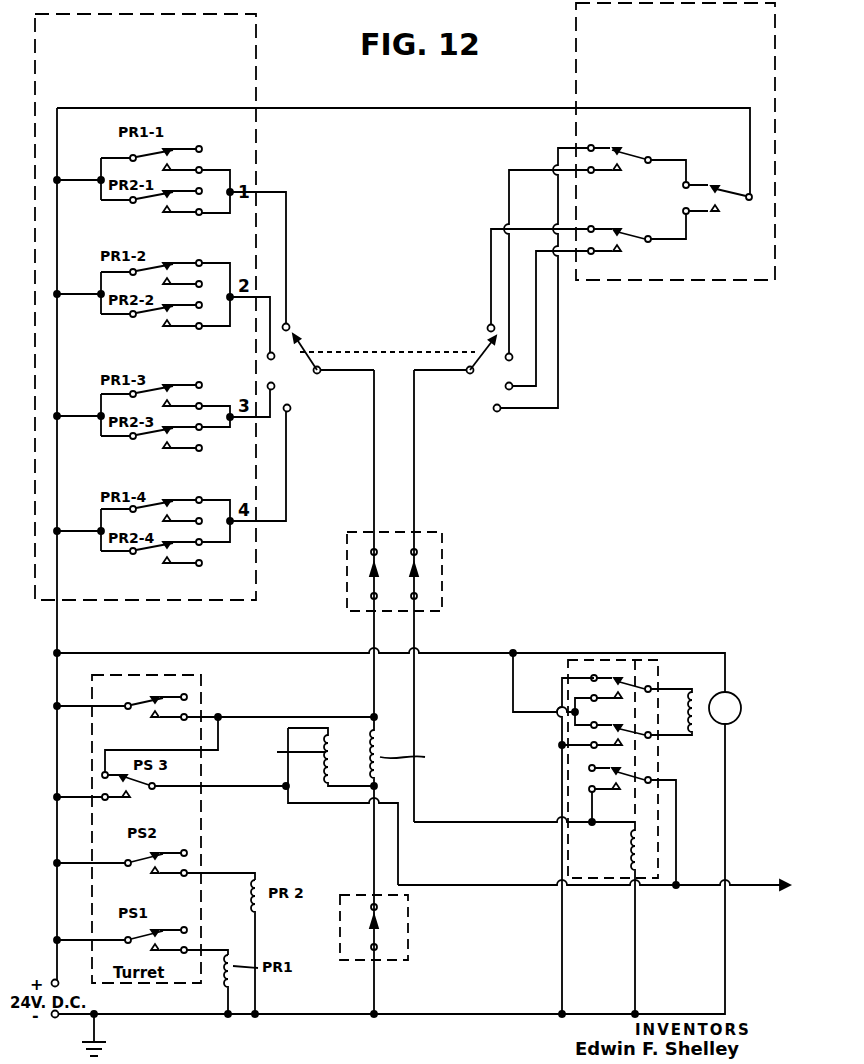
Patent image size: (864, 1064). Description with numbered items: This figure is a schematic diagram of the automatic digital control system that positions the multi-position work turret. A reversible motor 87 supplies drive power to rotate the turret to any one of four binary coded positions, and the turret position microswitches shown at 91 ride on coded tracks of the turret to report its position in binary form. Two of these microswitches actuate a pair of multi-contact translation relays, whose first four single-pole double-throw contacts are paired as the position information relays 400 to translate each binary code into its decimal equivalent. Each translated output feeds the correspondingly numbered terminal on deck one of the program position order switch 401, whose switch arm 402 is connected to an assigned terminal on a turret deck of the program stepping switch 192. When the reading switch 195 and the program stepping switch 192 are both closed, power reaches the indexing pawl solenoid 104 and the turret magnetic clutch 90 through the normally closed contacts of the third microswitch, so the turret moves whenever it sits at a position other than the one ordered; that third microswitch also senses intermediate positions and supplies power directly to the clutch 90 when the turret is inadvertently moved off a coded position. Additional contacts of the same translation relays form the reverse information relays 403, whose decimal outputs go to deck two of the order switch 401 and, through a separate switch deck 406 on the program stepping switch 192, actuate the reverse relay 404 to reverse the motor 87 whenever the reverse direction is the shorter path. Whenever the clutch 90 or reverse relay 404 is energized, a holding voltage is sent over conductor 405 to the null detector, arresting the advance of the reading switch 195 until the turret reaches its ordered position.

The position information relays 400 is at (256, 50).
The reverse information relays 403 is at (576, 50).
The program position order switch 401 is at (396, 348).
The switch arm 402 is at (293, 343).
The switch deck 406 is at (414, 576).
The program stepping switch 192 is at (438, 559).
The indexing pawl solenoid 104 is at (380, 735).
The reading switch 195 is at (410, 905).
The microswitches PS1 through PS4 91 is at (203, 701).
The turret magnetic clutch 90 is at (311, 806).
The reversible motor 87 is at (733, 697).
The reverse relay 404 is at (632, 668).
The conductor 405 is at (757, 888).